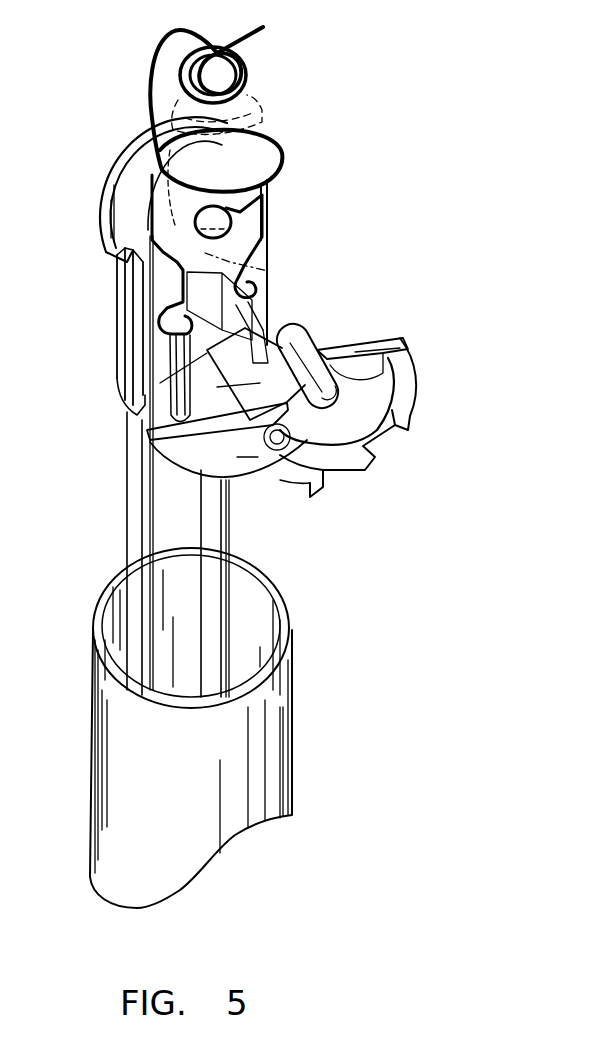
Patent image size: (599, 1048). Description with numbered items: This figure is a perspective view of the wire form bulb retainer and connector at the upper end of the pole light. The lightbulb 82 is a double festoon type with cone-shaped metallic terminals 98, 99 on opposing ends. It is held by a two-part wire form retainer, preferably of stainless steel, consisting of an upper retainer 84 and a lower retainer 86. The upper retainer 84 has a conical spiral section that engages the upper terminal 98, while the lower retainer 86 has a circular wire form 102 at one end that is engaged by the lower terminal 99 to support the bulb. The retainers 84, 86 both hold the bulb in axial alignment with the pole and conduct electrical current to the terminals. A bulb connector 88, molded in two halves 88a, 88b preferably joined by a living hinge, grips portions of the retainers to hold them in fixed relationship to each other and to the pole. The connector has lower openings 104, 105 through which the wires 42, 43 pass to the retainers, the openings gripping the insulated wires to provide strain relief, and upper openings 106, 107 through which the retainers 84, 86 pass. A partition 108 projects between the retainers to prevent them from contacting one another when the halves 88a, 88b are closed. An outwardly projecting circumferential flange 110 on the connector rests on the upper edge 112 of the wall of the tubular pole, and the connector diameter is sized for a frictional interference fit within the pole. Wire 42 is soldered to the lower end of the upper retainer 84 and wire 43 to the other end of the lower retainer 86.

The wire 42 is at (137, 495).
The wire 43 is at (215, 538).
The lightbulb 82 is at (248, 99).
The upper retainer 84 is at (152, 88).
The lower retainer 86 is at (260, 252).
The bulb connector 88 is at (351, 340).
The connector half 88a is at (118, 303).
The connector half 88b is at (360, 423).
The upper cone-shaped terminal 98 is at (222, 80).
The lower cone-shaped terminal 99 is at (268, 271).
The circular wire form 102 is at (272, 226).
The lower opening 104 is at (165, 325).
The lower opening 105 is at (258, 330).
The upper opening 106 is at (300, 448).
The upper opening 107 is at (400, 346).
The partition 108 is at (138, 420).
The circumferential flange 110 is at (109, 226).
The upper edge 112 is at (294, 625).